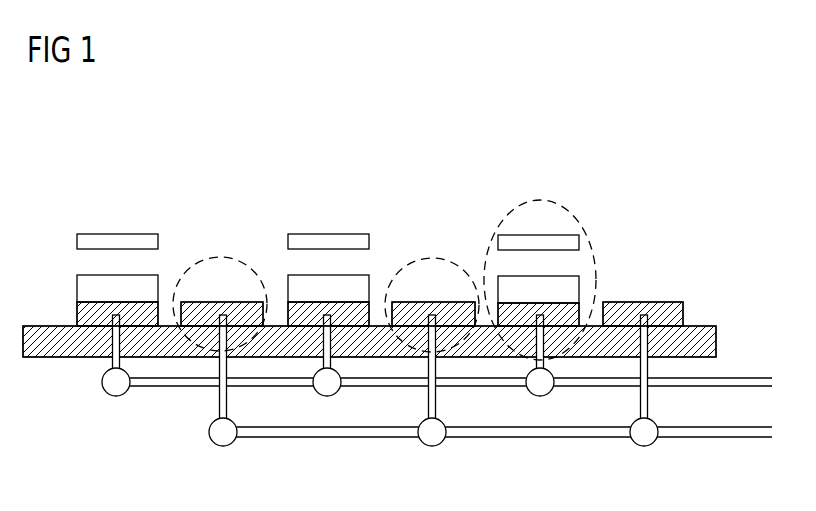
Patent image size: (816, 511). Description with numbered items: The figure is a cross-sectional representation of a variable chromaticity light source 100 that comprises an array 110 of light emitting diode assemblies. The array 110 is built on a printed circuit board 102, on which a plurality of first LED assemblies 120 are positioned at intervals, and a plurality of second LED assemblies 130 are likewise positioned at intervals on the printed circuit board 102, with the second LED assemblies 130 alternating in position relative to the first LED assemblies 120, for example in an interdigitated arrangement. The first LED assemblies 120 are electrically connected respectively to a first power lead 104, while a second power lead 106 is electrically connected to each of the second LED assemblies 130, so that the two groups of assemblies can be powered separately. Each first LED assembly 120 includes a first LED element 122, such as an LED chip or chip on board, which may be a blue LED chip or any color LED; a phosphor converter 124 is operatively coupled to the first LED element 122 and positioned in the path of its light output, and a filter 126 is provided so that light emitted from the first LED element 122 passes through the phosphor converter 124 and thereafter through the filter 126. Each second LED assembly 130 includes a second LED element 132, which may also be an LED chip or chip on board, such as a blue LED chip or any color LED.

The variable chromaticity light source 100 is at (690, 200).
The printed circuit board 102 is at (82, 372).
The first power lead 104 is at (744, 378).
The second power lead 106 is at (745, 438).
The array 110 is at (722, 240).
The first LED assembly 120 is at (73, 206).
The first LED element 122 is at (84, 308).
The phosphor converter 124 is at (84, 283).
The filter 126 is at (117, 233).
The second LED assembly 130 is at (218, 257).
The second LED element 132 is at (166, 323).